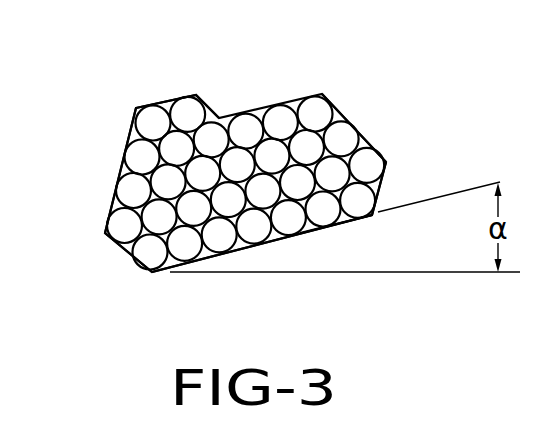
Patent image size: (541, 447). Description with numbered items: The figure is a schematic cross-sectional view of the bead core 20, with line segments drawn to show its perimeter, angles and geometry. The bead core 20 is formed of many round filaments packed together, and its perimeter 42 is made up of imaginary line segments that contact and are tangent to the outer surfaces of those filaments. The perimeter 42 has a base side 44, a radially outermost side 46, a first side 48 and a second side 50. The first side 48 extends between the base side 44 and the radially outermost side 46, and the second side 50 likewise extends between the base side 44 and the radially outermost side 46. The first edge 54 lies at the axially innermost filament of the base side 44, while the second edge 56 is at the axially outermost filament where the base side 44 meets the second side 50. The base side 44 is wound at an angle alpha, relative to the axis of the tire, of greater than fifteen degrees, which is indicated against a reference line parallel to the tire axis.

The bead core 20 is at (284, 52).
The perimeter 42 is at (358, 131).
The base side 44 is at (273, 241).
The radially outermost side 46 is at (168, 100).
The first side 48 is at (129, 138).
The second side 50 is at (381, 180).
The first edge 54 is at (151, 272).
The second edge 56 is at (368, 218).